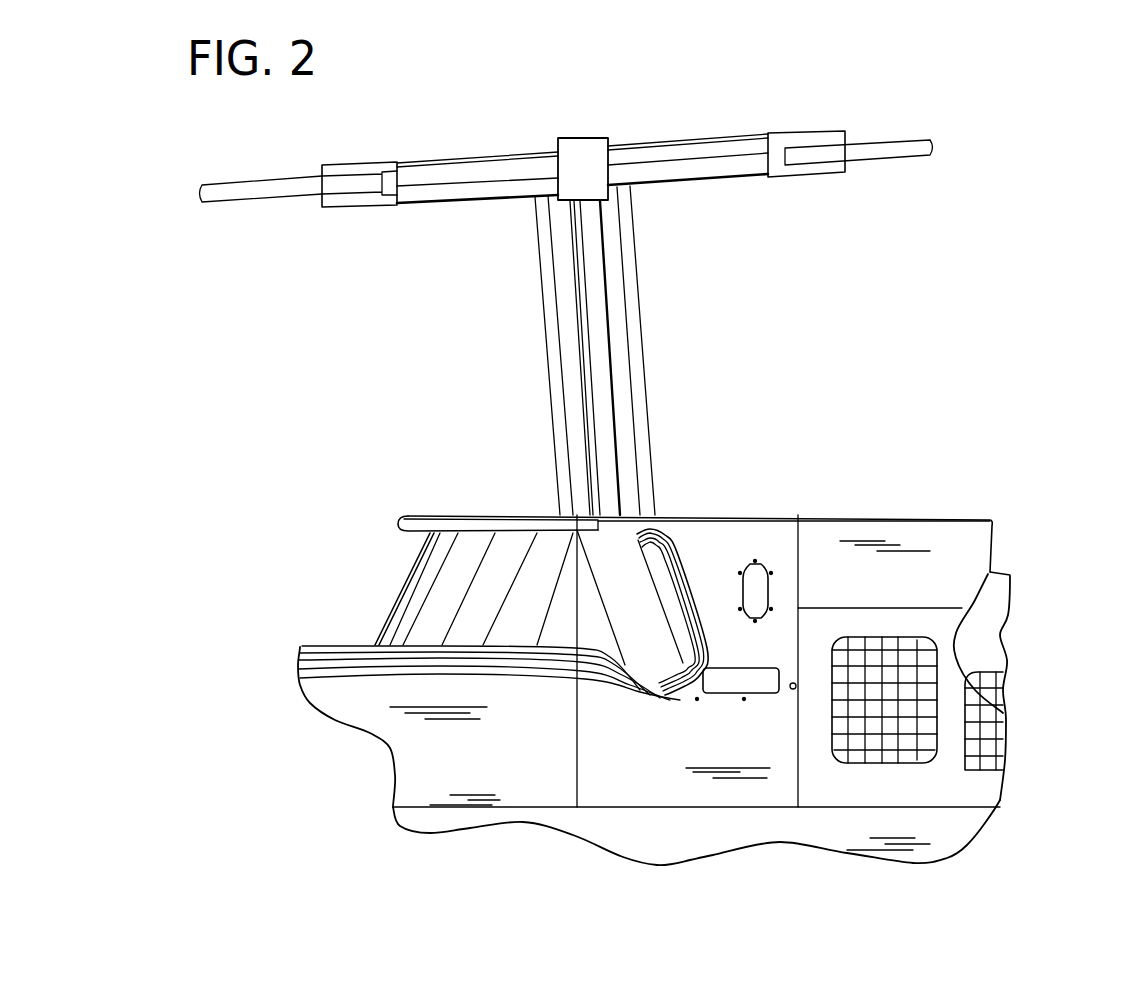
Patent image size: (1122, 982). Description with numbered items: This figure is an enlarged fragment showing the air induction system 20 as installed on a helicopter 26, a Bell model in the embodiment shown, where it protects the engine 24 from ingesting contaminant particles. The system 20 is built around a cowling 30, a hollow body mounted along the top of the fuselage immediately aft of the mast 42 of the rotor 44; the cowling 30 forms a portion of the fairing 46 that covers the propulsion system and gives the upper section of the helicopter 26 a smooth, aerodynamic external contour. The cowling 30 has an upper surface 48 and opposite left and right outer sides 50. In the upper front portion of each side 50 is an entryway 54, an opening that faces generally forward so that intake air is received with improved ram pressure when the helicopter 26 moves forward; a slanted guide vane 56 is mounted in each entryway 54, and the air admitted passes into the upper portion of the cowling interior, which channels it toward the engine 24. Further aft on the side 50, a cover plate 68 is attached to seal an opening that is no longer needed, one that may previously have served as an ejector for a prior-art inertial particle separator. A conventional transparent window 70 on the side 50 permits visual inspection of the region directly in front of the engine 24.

The air induction system 20 is at (695, 442).
The engine 24 is at (1003, 573).
The helicopter 26 is at (967, 845).
The cowling 30 is at (703, 517).
The mast 42 is at (575, 315).
The rotor 44 is at (908, 140).
The fairing 46 is at (888, 520).
The upper surface 48 is at (745, 517).
The outer sides 50 is at (767, 653).
The entryways 54 is at (662, 573).
The guide vane 56 is at (601, 617).
The cover plates 68 is at (727, 695).
The windows 70 is at (771, 583).